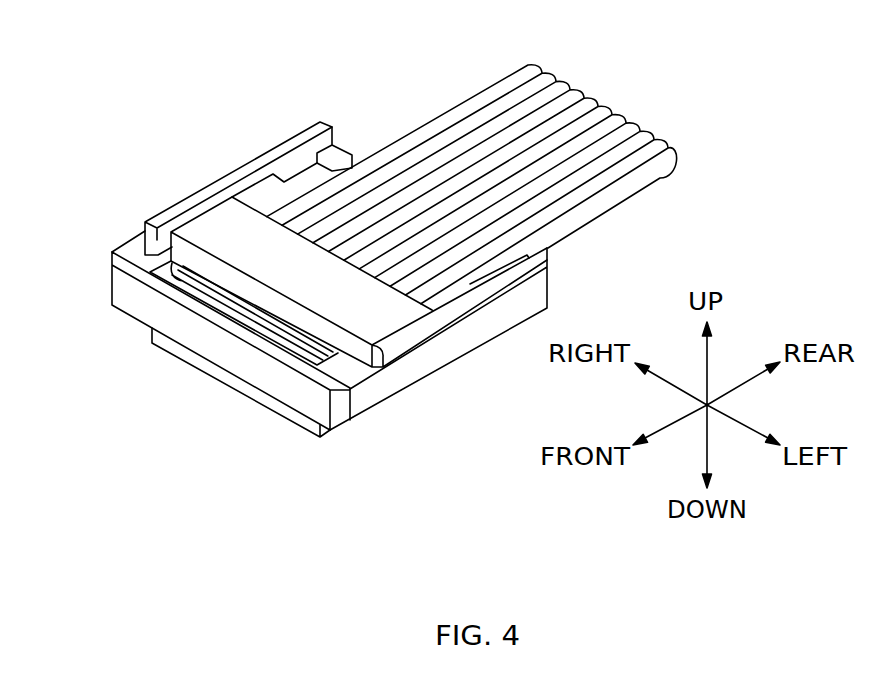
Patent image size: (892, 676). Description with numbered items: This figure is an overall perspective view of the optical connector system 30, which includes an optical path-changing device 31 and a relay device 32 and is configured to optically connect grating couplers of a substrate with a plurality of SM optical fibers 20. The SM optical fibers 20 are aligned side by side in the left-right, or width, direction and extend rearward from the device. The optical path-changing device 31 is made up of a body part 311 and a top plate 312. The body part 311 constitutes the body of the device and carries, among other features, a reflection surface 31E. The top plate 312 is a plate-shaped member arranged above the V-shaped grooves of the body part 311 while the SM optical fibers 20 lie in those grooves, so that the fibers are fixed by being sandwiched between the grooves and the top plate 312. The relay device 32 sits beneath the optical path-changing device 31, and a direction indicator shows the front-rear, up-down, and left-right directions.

The SM optical fibers 20 is at (460, 103).
The optical connector system 30 is at (356, 446).
The optical path-changing device 31 is at (281, 251).
The body part 311 is at (117, 287).
The top plate 312 is at (223, 212).
The reflection surface 31E is at (191, 284).
The relay device 32 is at (277, 414).